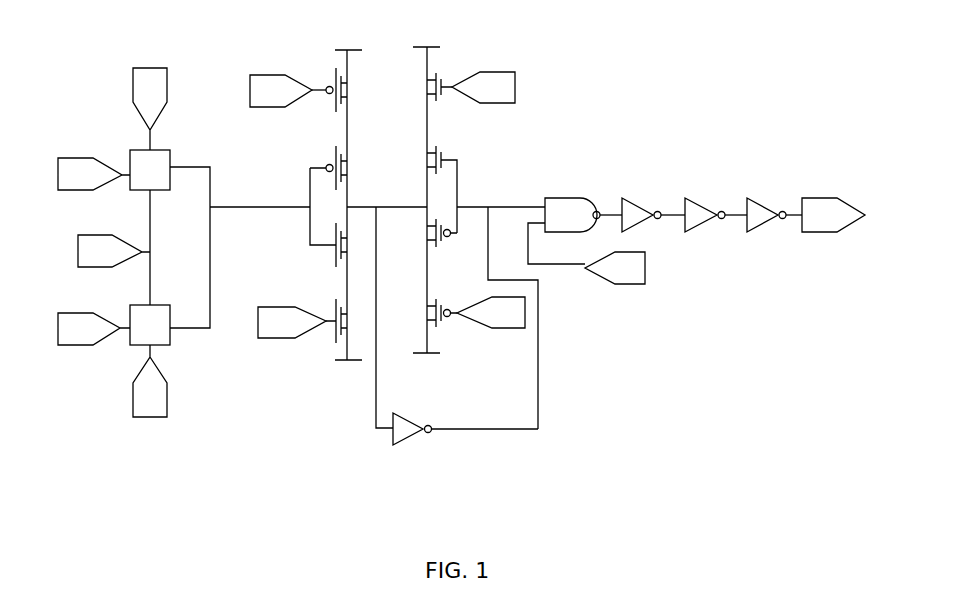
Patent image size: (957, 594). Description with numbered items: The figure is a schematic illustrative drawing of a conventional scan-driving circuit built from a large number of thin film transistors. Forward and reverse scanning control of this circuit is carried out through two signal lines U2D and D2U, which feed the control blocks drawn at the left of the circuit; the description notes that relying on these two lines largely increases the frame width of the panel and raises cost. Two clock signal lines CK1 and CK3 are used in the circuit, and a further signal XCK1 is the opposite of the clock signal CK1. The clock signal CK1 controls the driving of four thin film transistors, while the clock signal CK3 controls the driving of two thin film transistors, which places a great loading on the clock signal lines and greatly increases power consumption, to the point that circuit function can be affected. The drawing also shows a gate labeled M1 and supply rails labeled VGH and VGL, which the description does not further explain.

The NAND gate M1 is at (572, 223).
The signal line U2D is at (150, 246).
The signal line D2U is at (114, 262).
The clock signal line CK1 is at (386, 219).
The signal opposite to the clock signal CK1 XCK1 is at (387, 220).
The clock signal line CK3 is at (627, 268).
The high voltage supply VGH is at (388, 205).
The low voltage supply VGL is at (400, 215).